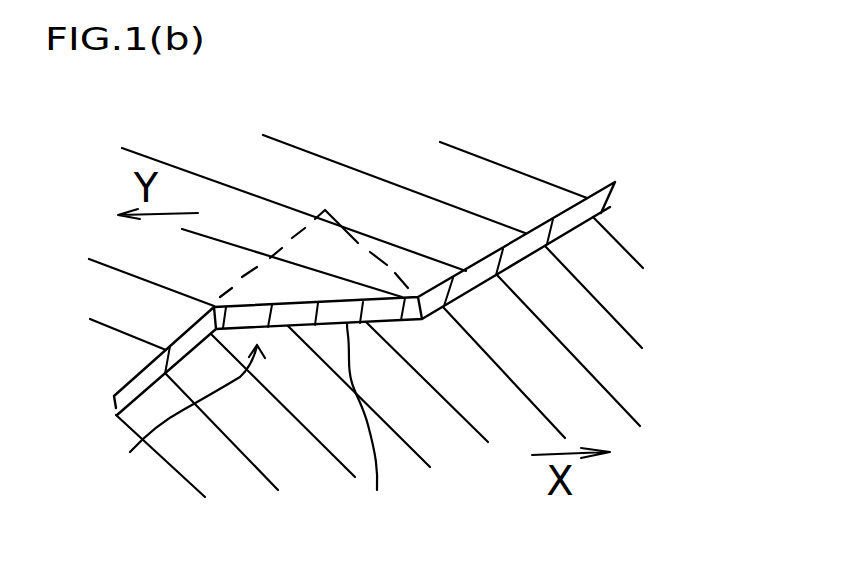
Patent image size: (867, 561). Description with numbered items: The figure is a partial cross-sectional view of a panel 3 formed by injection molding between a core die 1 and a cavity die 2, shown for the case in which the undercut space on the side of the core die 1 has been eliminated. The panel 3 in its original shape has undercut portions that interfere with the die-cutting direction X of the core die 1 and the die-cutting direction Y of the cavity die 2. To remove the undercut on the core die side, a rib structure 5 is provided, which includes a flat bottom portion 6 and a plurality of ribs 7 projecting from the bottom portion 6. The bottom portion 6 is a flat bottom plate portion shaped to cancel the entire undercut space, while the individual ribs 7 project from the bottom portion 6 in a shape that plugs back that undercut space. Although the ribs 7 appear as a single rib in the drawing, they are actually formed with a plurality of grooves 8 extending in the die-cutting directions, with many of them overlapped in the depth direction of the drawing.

The core die 1 is at (620, 292).
The cavity die 2 is at (546, 191).
The panel 3 is at (623, 192).
The rib structure 5 is at (186, 416).
The bottom portion 6 is at (302, 422).
The ribs 7 is at (378, 261).
The grooves 8 is at (262, 303).